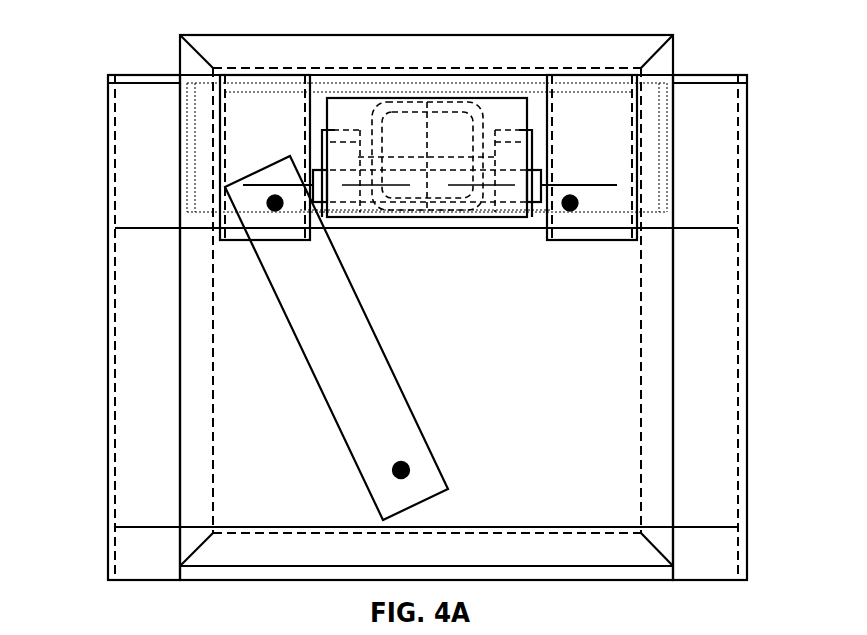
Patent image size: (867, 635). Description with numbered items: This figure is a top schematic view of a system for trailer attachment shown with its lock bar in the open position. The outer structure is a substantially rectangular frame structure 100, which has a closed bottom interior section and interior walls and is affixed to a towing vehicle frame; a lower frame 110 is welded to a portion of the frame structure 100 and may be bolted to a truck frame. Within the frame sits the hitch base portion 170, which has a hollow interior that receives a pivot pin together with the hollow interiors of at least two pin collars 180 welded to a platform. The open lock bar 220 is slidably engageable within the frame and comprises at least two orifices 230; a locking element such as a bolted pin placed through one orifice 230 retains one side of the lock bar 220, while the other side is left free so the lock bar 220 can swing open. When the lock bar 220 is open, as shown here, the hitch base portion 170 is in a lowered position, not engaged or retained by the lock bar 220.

The substantially rectangular frame structure 100 is at (193, 450).
The lower frame 110 is at (153, 498).
The hitch base portion 170 is at (447, 122).
The pin collars 180 is at (322, 140).
The open lock bar 220 is at (305, 313).
The orifices 230 is at (263, 198).